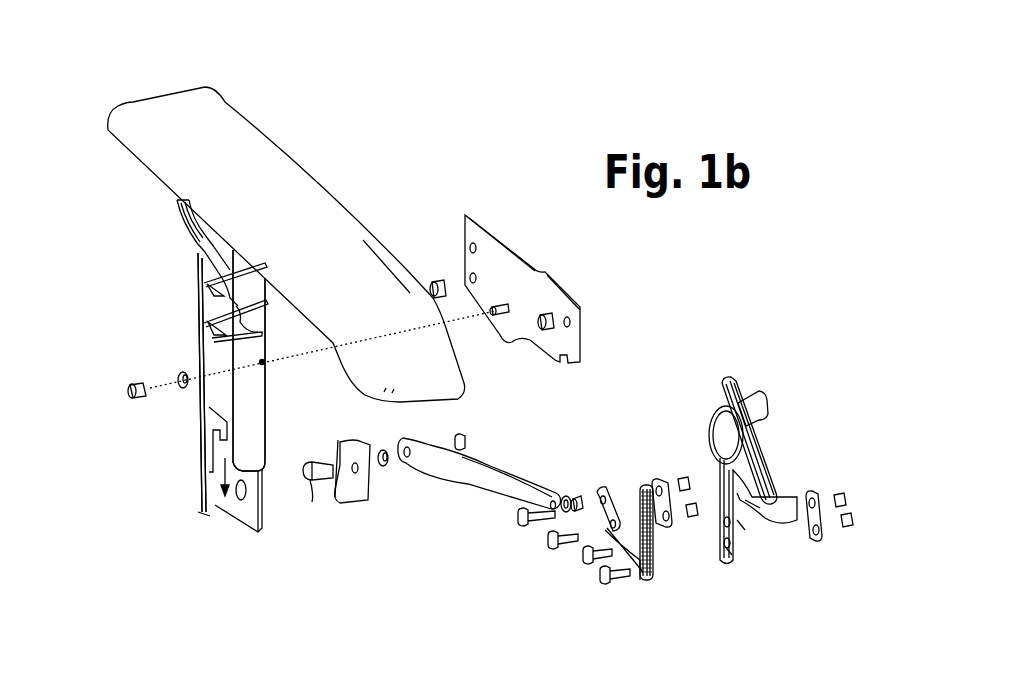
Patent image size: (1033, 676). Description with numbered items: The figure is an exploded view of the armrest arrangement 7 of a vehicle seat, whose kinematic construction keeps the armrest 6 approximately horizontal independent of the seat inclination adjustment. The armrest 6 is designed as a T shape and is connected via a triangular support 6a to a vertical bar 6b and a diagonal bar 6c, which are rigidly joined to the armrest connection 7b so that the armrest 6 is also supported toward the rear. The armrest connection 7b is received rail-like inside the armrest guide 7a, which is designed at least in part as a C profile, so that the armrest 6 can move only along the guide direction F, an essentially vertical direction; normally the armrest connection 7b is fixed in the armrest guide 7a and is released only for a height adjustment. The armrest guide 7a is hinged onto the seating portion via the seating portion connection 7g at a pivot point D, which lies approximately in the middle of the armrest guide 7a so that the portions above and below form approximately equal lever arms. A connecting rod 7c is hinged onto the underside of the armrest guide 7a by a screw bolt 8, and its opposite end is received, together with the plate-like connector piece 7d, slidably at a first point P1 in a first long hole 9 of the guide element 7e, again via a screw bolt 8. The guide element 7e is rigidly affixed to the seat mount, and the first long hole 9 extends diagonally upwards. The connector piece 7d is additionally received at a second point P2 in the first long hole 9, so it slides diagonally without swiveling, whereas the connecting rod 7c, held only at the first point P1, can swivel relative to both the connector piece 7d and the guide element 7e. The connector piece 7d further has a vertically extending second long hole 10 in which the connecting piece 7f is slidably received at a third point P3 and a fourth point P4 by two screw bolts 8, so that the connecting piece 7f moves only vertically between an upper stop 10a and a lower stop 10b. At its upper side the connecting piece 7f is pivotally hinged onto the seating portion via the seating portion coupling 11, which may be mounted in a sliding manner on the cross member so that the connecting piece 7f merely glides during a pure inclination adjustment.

The armrest 6 is at (220, 116).
The triangular support 6a is at (173, 215).
The vertical bar 6b is at (200, 270).
The diagonal bar 6c is at (255, 298).
The armrest arrangement 7 is at (360, 132).
The armrest guide 7a is at (253, 410).
The armrest connection 7b is at (210, 400).
The connecting rod 7c is at (487, 477).
The connector piece 7d is at (626, 543).
The guide element 7e is at (771, 500).
The connecting piece 7f is at (745, 503).
The seating portion connection 7g is at (541, 295).
The screw bolt 8 is at (312, 490).
The first long hole 9 is at (728, 380).
The second long hole 10 is at (657, 552).
The upper stop 10a is at (641, 486).
The lower stop 10b is at (643, 580).
The seating portion coupling 11 is at (716, 425).
The pivot point D is at (150, 386).
The guide direction F is at (222, 480).
The first point P1 is at (550, 497).
The second point P2 is at (598, 527).
The third point P3 is at (739, 533).
The fourth point P4 is at (731, 552).